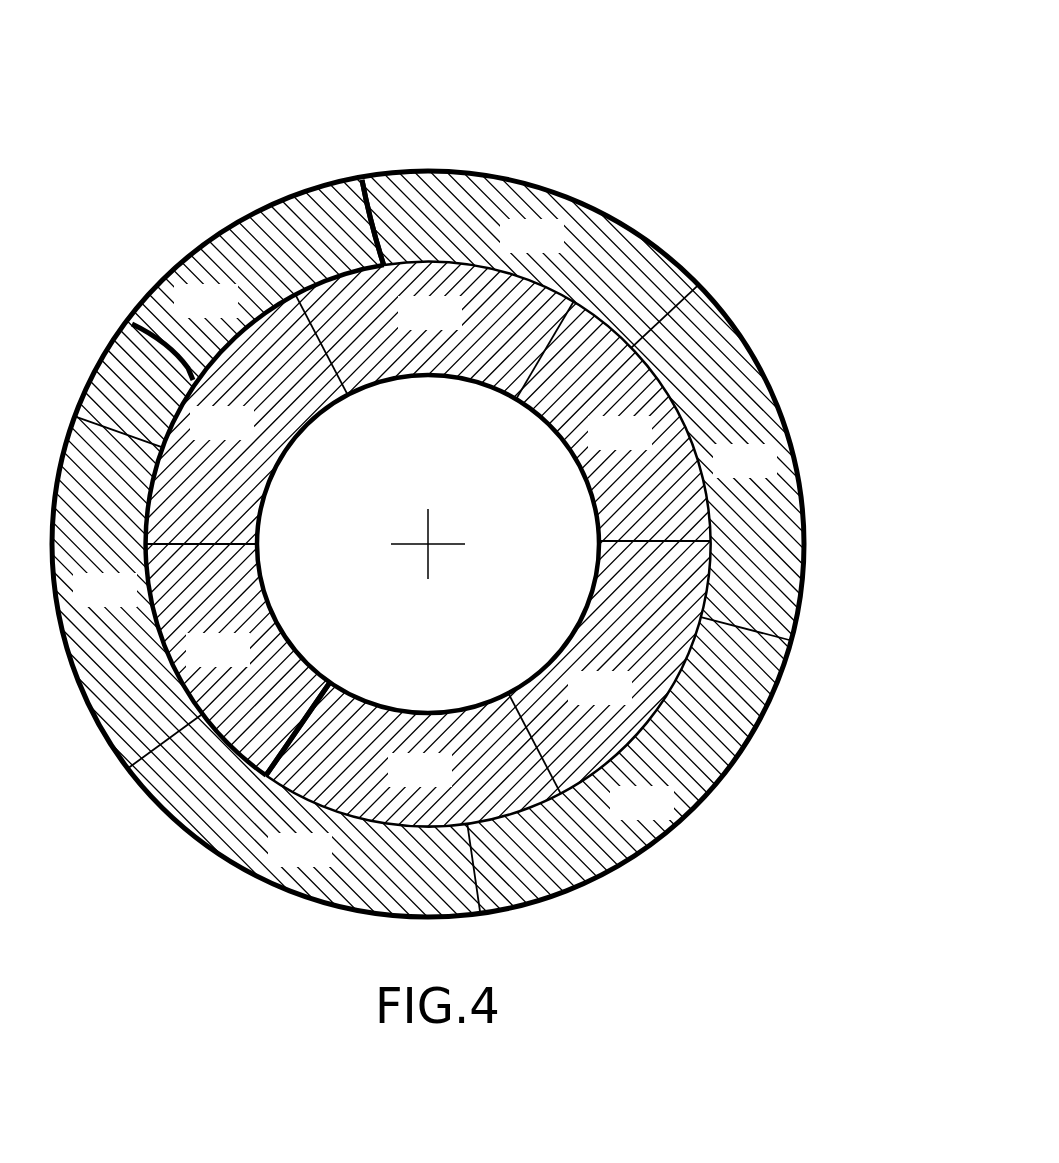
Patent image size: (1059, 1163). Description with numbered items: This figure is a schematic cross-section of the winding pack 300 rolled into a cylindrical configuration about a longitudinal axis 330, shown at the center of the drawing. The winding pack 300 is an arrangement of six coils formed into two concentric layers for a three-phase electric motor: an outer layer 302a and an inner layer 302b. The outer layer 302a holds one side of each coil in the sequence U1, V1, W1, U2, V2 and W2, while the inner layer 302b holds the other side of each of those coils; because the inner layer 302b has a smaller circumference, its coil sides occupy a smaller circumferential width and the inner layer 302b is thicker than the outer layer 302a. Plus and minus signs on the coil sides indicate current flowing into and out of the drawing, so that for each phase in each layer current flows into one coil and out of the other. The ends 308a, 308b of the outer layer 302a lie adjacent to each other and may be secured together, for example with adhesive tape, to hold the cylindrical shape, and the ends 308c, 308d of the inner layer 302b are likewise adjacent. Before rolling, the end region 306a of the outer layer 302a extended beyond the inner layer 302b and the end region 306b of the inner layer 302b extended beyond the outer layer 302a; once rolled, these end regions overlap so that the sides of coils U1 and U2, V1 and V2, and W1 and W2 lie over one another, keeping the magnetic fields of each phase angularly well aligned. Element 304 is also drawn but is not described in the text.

The winding pack 300 is at (684, 86).
The outer layer 302a is at (767, 648).
The inner layer 302b is at (695, 571).
The slot / marker line 304 is at (131, 325).
The end region of the outer layer 306a is at (262, 232).
The end region of the inner layer 306b is at (247, 728).
The end of the outer layer 308a is at (358, 190).
The end of the outer layer 308b is at (373, 213).
The end of the inner layer 308c is at (290, 772).
The end of the inner layer 308d is at (280, 762).
The longitudinal axis 330 is at (429, 524).